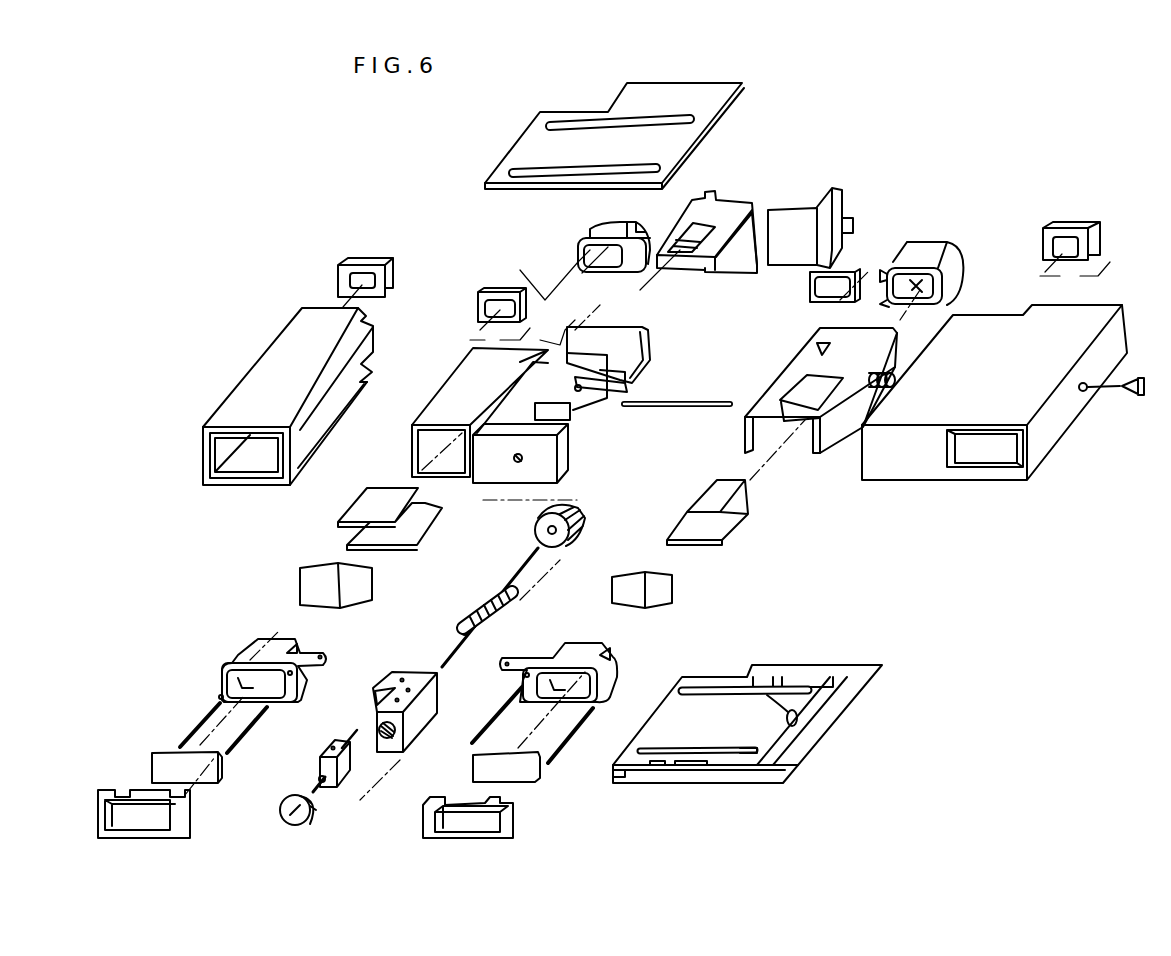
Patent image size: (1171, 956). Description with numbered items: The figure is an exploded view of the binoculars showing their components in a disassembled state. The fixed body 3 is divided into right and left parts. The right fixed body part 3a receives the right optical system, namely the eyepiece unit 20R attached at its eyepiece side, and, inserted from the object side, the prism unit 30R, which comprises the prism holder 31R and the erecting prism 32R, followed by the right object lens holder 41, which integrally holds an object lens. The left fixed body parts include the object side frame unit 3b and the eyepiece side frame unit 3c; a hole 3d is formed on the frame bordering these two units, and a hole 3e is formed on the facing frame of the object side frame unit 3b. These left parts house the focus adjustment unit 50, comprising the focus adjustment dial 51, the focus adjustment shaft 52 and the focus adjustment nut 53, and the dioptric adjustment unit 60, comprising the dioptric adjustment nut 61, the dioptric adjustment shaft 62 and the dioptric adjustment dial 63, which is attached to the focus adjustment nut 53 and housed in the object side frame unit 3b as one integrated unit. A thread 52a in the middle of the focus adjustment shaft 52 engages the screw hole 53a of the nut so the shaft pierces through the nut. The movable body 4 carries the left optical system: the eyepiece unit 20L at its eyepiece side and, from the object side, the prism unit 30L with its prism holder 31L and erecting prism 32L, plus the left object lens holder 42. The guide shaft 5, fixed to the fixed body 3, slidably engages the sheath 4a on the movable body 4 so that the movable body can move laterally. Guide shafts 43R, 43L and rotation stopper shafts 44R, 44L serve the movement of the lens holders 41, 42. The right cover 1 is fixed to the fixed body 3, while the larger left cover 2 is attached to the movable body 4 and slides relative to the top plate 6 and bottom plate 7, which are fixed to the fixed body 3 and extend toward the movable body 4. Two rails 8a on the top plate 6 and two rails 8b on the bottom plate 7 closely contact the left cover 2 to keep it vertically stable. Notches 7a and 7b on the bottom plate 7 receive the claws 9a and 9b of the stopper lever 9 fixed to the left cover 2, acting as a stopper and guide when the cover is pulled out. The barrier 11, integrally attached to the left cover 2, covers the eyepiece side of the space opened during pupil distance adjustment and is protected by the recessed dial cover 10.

The right cover 1 is at (268, 368).
The left cover 2 is at (1052, 423).
The fixed body 3 is at (555, 401).
The right fixed body part 3a is at (447, 401).
The object side frame unit 3b is at (567, 437).
The eyepiece side frame unit 3c is at (610, 353).
The hole 3d is at (613, 376).
The hole 3e is at (524, 460).
The movable body 4 is at (828, 433).
The sheath 4a is at (750, 400).
The guide shaft 5 is at (660, 408).
The top plate 6 is at (699, 89).
The bottom plate 7 is at (778, 720).
The notch 7a is at (693, 770).
The notch 7b is at (818, 672).
The rails 8a is at (649, 167).
The rails 8b is at (797, 718).
The stopper lever 9 is at (747, 722).
The claw 9a is at (668, 766).
The claw 9b is at (786, 678).
The dial cover 10 is at (723, 208).
The barrier 11 is at (838, 214).
The eyepiece unit 20R is at (593, 226).
The eyepiece unit 20L is at (928, 251).
The prism unit 30R is at (327, 548).
The prism holder 31R is at (365, 512).
The erecting prism 32R is at (312, 582).
The prism unit 30L is at (733, 544).
The prism holder 31L is at (722, 530).
The erecting prism 32L is at (672, 582).
The right object lens holder 41 is at (260, 652).
The left object lens holder 42 is at (610, 652).
The guide shaft 43R is at (250, 720).
The guide shaft 43L is at (497, 712).
The rotation stopper shaft 44R is at (198, 725).
The rotation stopper shaft 44L is at (596, 712).
The focus adjustment unit 50 is at (479, 643).
The focus adjustment dial 51 is at (540, 533).
The focus adjustment shaft 52 is at (452, 655).
The thread 52a is at (513, 600).
The focus adjustment nut 53 is at (396, 674).
The screw hole 53a is at (404, 731).
The dioptric adjustment unit 60 is at (405, 772).
The dioptric adjustment nut 61 is at (343, 763).
The dioptric adjustment shaft 62 is at (314, 789).
The dioptric adjustment dial 63 is at (300, 824).